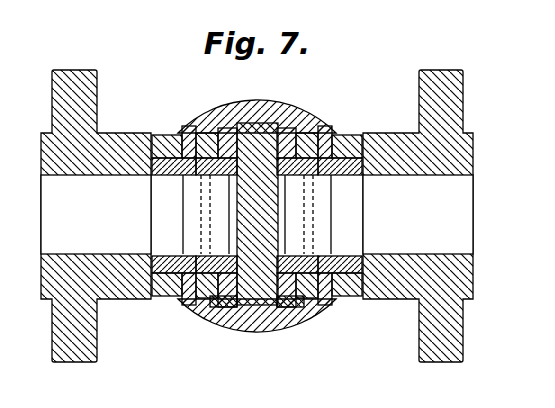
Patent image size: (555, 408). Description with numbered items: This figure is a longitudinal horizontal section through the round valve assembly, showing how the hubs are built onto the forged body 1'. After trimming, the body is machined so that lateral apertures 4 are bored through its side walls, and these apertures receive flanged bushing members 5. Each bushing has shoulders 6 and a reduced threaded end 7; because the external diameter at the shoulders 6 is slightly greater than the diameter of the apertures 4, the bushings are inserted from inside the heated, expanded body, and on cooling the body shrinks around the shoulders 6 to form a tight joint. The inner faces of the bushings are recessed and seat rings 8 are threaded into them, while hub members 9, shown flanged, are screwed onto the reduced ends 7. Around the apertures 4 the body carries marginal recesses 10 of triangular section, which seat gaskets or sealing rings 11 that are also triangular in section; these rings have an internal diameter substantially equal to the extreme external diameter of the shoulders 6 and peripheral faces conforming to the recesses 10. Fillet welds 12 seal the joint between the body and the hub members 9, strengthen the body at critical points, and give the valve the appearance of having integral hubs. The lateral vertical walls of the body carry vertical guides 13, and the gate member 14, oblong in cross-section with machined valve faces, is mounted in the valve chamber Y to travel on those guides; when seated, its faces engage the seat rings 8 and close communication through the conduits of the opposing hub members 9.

The forged body 1' is at (257, 201).
The lateral apertures 4 is at (165, 297).
The flanged bushing members 5 is at (162, 178).
The shoulders 6 is at (192, 178).
The reduced threaded ends 7 is at (165, 134).
The seat rings 8 is at (290, 306).
The hub members 9 is at (60, 262).
The marginal recesses 10 is at (194, 127).
The sealing rings 11 is at (210, 300).
The fillet welds 12 is at (346, 133).
The vertical guides 13 is at (258, 122).
The gate member 14 is at (230, 132).
The valve chamber Y is at (221, 134).